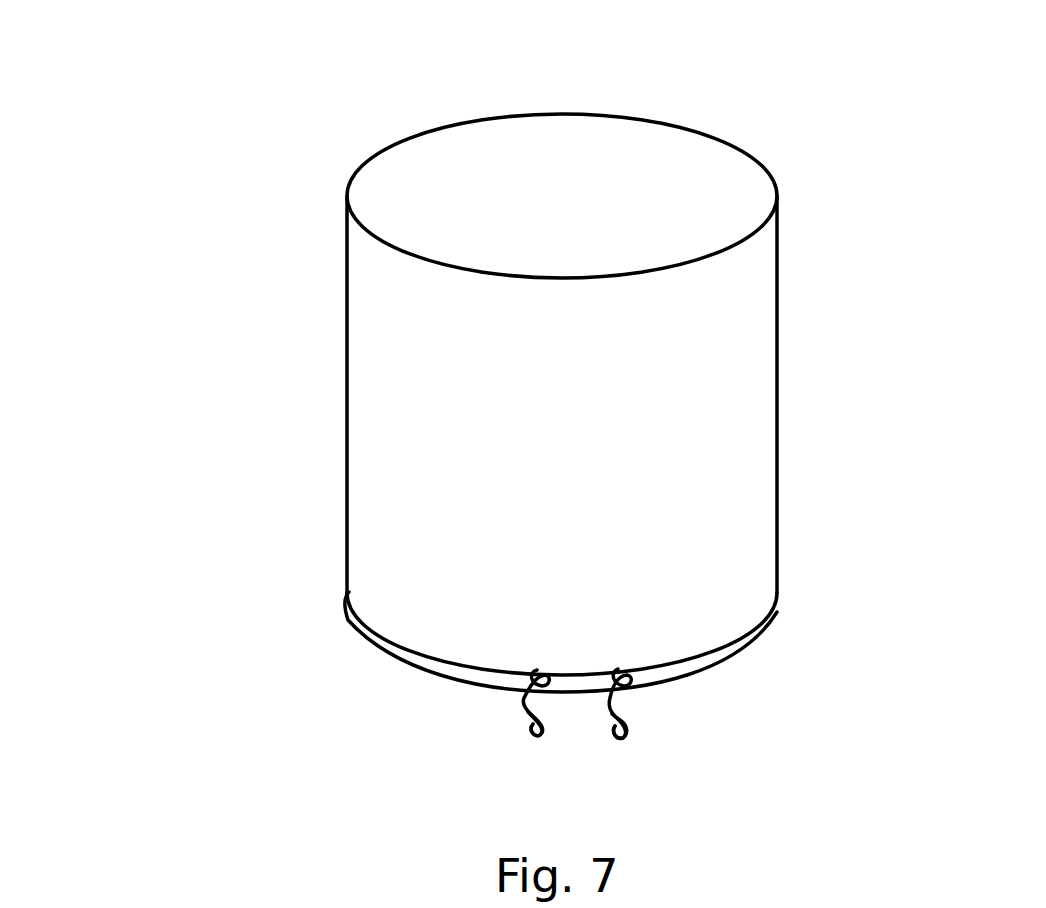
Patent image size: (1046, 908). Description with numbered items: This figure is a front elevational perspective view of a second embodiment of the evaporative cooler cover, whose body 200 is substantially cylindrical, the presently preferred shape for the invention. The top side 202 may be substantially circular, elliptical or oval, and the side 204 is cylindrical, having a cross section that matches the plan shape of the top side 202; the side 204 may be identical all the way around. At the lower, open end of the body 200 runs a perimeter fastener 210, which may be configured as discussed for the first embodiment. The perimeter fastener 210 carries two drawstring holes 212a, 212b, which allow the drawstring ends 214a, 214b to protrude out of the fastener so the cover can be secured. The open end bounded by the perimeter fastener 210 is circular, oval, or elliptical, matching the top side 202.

The body 200 is at (200, 114).
The top side 202 is at (518, 188).
The side 204 is at (422, 402).
The perimeter fastener 210 is at (422, 662).
The drawstring hole 212a is at (537, 675).
The drawstring hole 212b is at (624, 672).
The drawstring end 214a is at (532, 717).
The drawstring end 214b is at (630, 740).